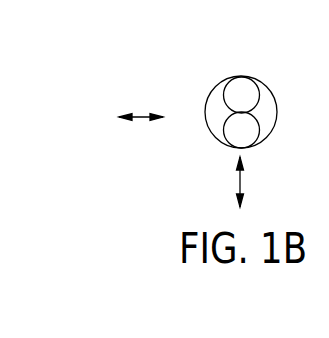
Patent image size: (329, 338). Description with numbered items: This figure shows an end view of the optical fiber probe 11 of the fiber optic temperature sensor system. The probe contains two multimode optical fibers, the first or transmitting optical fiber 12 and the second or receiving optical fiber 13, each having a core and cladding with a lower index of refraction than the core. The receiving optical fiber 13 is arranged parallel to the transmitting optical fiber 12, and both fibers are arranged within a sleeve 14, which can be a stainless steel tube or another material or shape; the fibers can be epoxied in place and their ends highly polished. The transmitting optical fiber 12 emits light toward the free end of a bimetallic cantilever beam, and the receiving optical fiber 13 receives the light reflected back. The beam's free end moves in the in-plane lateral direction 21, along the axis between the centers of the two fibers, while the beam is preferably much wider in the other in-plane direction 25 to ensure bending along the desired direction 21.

The optical fiber probe 11 is at (258, 83).
The transmitting optical fiber 12 is at (238, 132).
The receiving optical fiber 13 is at (243, 89).
The sleeve 14 is at (277, 112).
The in-plane lateral direction 21 is at (237, 184).
The other in-plane direction 25 is at (146, 113).